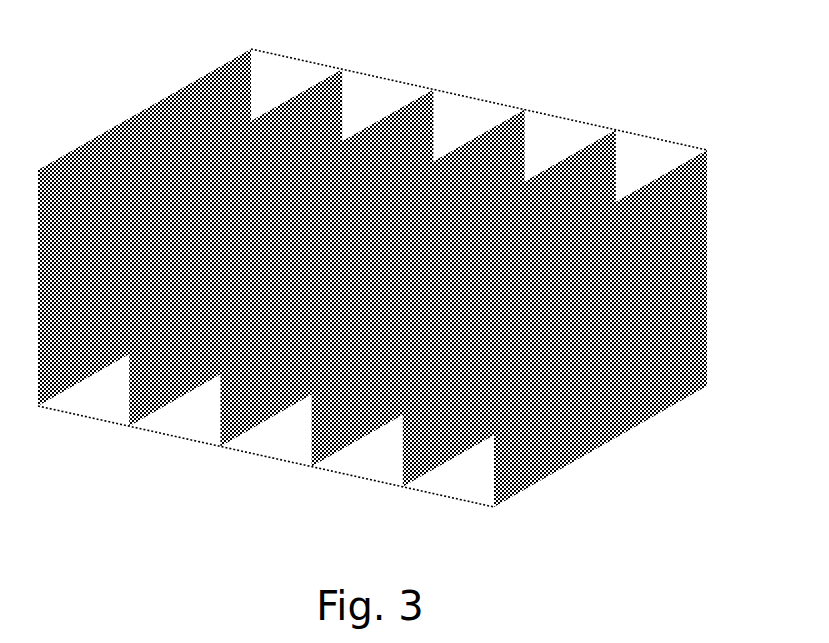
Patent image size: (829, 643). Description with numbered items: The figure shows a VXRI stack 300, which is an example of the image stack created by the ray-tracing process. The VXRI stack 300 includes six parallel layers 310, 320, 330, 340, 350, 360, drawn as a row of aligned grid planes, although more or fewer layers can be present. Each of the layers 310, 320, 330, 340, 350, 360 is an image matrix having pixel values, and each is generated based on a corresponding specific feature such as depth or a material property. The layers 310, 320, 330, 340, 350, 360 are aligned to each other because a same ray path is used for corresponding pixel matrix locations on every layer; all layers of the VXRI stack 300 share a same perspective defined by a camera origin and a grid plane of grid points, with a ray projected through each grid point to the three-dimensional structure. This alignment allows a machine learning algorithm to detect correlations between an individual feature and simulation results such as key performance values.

The VXRI stack 300 is at (402, 261).
The layer 310 is at (705, 160).
The layer 320 is at (615, 133).
The layer 330 is at (524, 113).
The layer 340 is at (432, 92).
The layer 350 is at (341, 72).
The layer 360 is at (250, 52).